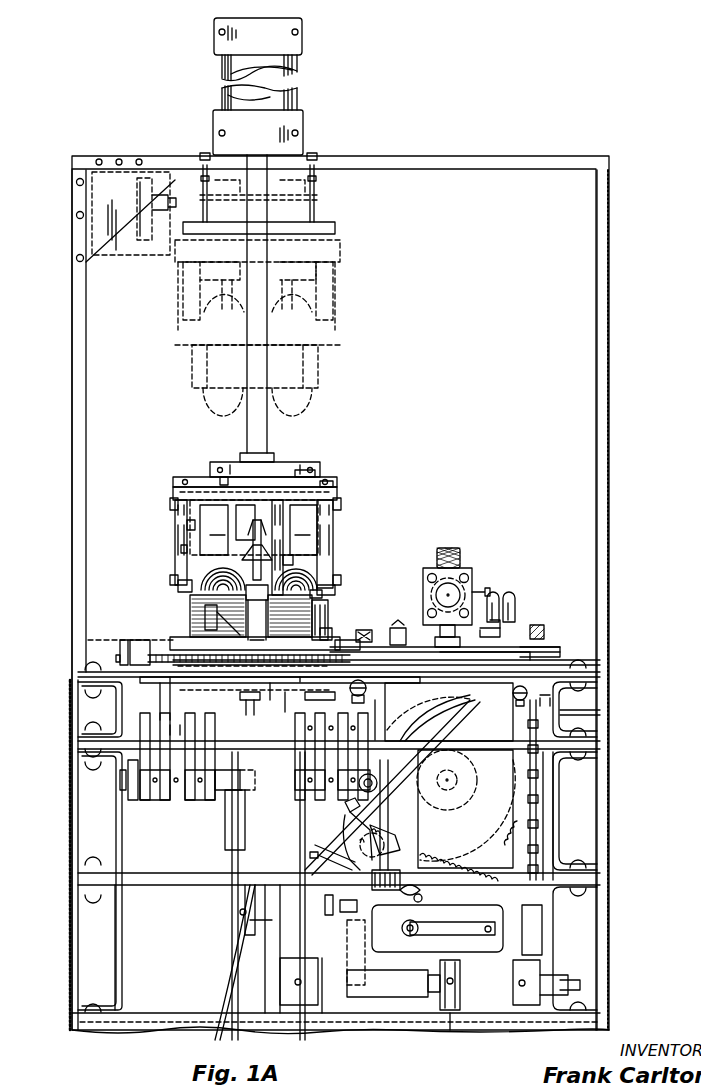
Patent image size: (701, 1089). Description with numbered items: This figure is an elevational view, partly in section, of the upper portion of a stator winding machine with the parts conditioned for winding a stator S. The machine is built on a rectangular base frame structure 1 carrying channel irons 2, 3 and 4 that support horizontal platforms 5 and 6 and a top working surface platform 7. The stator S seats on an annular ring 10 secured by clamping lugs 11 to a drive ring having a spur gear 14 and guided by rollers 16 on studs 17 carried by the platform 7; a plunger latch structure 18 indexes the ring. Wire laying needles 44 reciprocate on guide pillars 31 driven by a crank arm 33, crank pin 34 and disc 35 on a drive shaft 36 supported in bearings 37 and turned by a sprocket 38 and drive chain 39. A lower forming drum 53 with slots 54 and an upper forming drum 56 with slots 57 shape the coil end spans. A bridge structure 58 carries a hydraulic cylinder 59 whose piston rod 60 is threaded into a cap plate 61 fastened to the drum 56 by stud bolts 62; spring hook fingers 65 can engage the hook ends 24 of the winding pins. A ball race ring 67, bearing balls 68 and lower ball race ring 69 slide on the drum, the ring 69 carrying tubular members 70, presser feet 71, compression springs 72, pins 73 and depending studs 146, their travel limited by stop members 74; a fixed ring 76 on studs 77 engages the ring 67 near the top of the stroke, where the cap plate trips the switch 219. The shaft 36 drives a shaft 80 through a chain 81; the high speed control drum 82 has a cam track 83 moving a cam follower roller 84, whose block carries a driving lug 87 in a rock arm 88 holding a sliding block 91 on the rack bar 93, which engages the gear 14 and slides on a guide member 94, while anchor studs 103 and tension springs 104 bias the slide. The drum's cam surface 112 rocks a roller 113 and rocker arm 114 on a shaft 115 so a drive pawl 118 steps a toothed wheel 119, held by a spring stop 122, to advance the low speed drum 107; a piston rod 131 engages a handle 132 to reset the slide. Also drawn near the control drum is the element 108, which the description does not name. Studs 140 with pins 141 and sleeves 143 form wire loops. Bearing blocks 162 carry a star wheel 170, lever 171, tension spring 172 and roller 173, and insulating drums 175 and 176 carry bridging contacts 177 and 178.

The rectangular base frame structure 1 is at (100, 1028).
The channel iron 2 is at (112, 930).
The channel iron 3 is at (112, 828).
The channel iron 4 is at (112, 706).
The horizontal platform 5 is at (155, 875).
The horizontal platform 6 is at (227, 745).
The top working surface platform 7 is at (135, 682).
The annular ring 10 is at (358, 630).
The clamping lugs 11 is at (347, 648).
The spur gear 14 is at (285, 670).
The support and guide rollers 16 is at (345, 695).
The studs 17 is at (318, 695).
The plunger latch structure 18 is at (260, 576).
The hook ends 24 is at (320, 545).
The guide pillars 31 is at (230, 810).
The crank arm 33 is at (256, 935).
The crank pin 34 is at (240, 912).
The disc 35 is at (268, 978).
The drive shaft 36 is at (393, 983).
The bearings 37 is at (325, 1015).
The sprocket 38 is at (450, 1010).
The drive chain 39 is at (438, 998).
The wire laying needles 44 is at (242, 522).
The forming drum 53 is at (180, 648).
The slots 54 is at (245, 690).
The upper forming drum 56 is at (330, 264).
The slots 57 is at (258, 507).
The bridge structure 58 is at (538, 180).
The hydraulic cylinder 59 is at (297, 76).
The piston rod 60 is at (268, 442).
The cap plate 61 is at (300, 468).
The stud bolts 62 is at (222, 464).
The spring hook fingers 65 is at (317, 505).
The ball race ring 67 is at (322, 480).
The bearing balls 68 is at (190, 480).
The lower ball race ring 69 is at (330, 487).
The tubular members 70 is at (176, 530).
The presser foot 71 is at (178, 586).
The compression springs 72 is at (176, 508).
The pins 73 is at (176, 548).
The stop members 74 is at (178, 498).
The fixed ring 76 is at (335, 228).
The studs 77 is at (205, 190).
The shaft 80 is at (486, 796).
The chain 81 is at (540, 838).
The high speed control drum 82 is at (467, 815).
The cam track 83 is at (398, 815).
The cam follower roller 84 is at (409, 779).
The driving lug 87 is at (505, 630).
The rock arm 88 is at (545, 645).
The sliding block 91 is at (395, 628).
The rack bar 93 is at (122, 642).
The guide member 94 is at (540, 660).
The anchor studs 103 is at (522, 700).
The tension springs 104 is at (381, 720).
The low speed drum 107 is at (475, 884).
The hub 108 is at (455, 778).
The cam surface 112 is at (395, 822).
The roller 113 is at (378, 780).
The rocker arm 114 is at (345, 806).
The shaft 115 is at (395, 848).
The drive pawl 118 is at (345, 820).
The toothed wheel 119 is at (320, 870).
The spring stop 122 is at (325, 909).
The piston rod 131 is at (425, 580).
The handle 132 is at (460, 556).
The studs 140 is at (327, 630).
The pins 141 is at (330, 604).
The sleeves 143 is at (325, 590).
The depending studs 146 is at (320, 555).
The bearing blocks 162 is at (437, 928).
The star wheel 170 is at (430, 882).
The lever 171 is at (452, 929).
The tension spring 172 is at (358, 942).
The roller 173 is at (425, 930).
The insulating drum 175 is at (158, 800).
The insulating drum 176 is at (332, 786).
The bridging contact plates 177 is at (165, 805).
The bridging contacts 178 is at (335, 748).
The switch 219 is at (150, 240).
The stator S is at (320, 370).